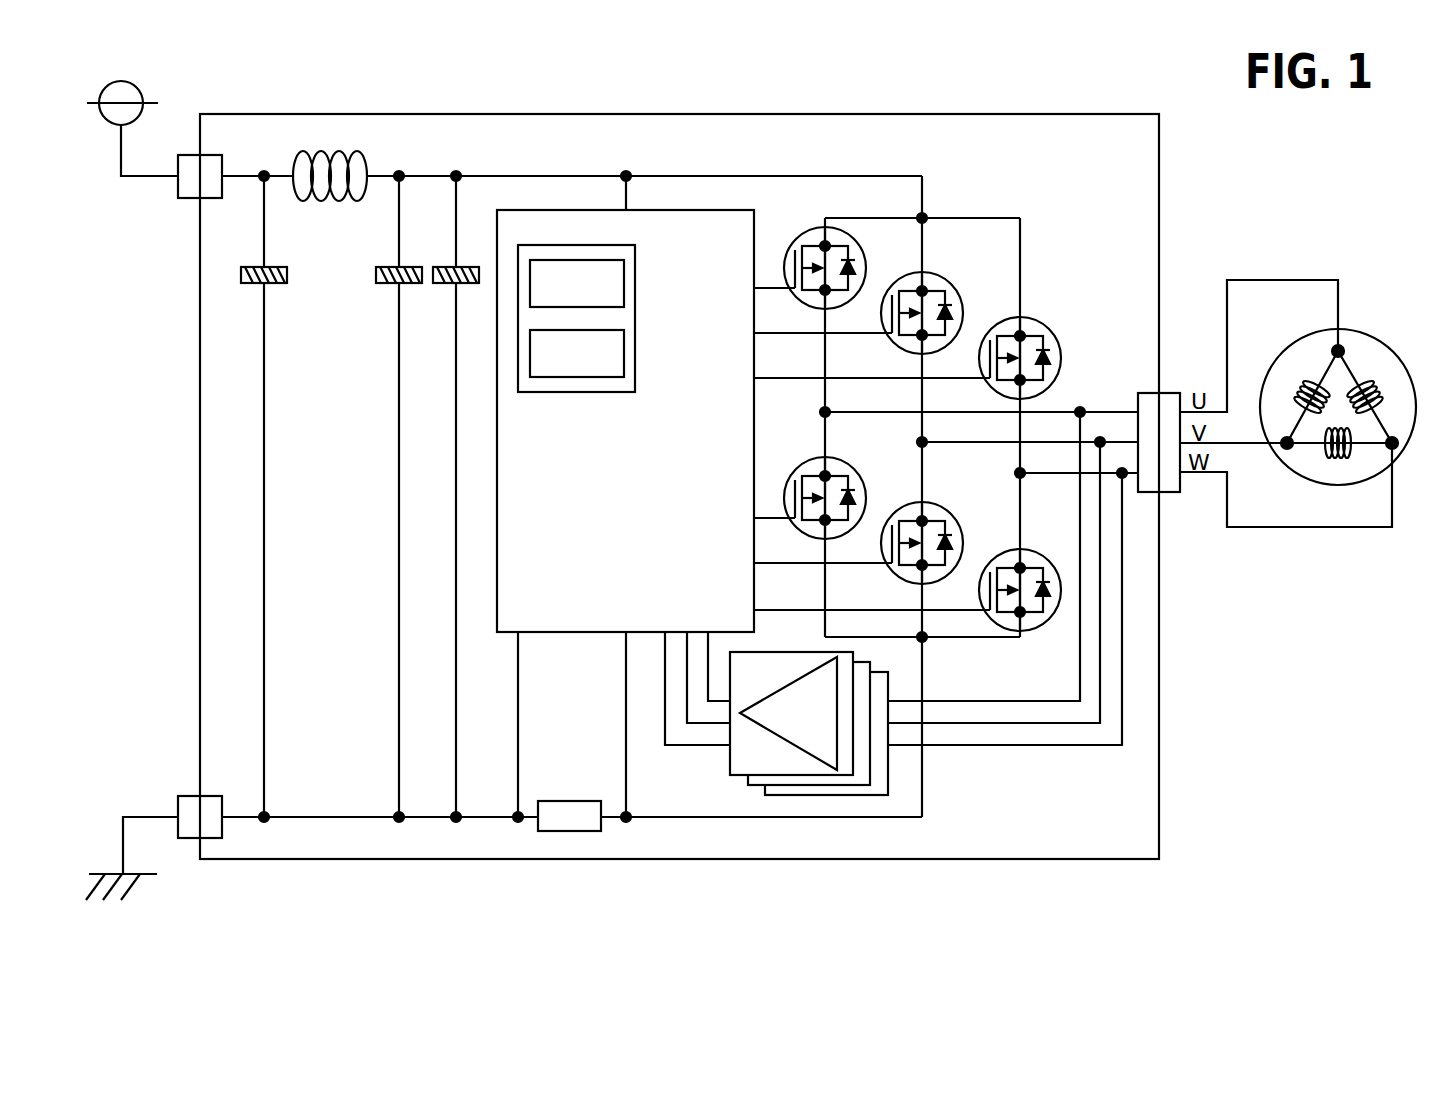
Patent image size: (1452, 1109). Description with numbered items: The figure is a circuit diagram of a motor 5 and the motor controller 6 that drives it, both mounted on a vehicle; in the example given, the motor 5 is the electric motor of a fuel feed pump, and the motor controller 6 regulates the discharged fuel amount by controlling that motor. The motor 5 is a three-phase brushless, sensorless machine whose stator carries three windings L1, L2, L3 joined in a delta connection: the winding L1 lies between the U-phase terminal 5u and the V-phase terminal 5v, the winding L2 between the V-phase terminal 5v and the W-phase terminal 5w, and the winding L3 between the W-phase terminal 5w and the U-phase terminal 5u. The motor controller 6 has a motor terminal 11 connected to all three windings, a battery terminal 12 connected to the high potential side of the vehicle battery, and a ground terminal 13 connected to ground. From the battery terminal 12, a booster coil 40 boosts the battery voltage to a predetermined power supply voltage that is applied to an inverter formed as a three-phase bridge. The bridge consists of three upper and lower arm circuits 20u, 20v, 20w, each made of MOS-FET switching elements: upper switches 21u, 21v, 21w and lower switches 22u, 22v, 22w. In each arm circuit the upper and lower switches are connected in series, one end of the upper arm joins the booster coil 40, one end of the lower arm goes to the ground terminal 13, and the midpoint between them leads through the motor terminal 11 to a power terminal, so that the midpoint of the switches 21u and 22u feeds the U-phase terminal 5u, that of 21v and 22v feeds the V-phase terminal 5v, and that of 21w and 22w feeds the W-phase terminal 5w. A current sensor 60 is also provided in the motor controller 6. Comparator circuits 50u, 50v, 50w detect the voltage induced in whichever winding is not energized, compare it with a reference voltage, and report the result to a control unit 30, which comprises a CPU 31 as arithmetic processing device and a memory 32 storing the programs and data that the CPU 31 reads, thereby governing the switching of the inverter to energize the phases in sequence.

The motor 5 is at (1347, 400).
The U-phase terminal 5u is at (1342, 347).
The V-phase terminal 5v is at (1287, 448).
The W-phase terminal 5w is at (1395, 448).
The winding L1 is at (1300, 385).
The winding L2 is at (1338, 460).
The winding L3 is at (1380, 380).
The motor controller 6 is at (488, 114).
The motor terminal 11 is at (1175, 495).
The battery terminal 12 is at (177, 185).
The ground terminal 13 is at (177, 803).
The upper and lower arm circuit 20u is at (811, 299).
The upper and lower arm circuit 20v is at (923, 322).
The upper and lower arm circuit 20w is at (1027, 345).
The switch 21u is at (801, 236).
The switch 21v is at (905, 283).
The switch 21w is at (1003, 327).
The switch 22u is at (806, 467).
The switch 22v is at (904, 511).
The switch 22w is at (1003, 557).
The control unit 30 is at (705, 210).
The CPU 31 is at (624, 281).
The memory 32 is at (624, 353).
The booster coil 40 is at (321, 152).
The comparator circuit 50u is at (730, 760).
The comparator circuit 50v is at (755, 785).
The comparator circuit 50w is at (880, 785).
The current sensor 60 is at (568, 832).